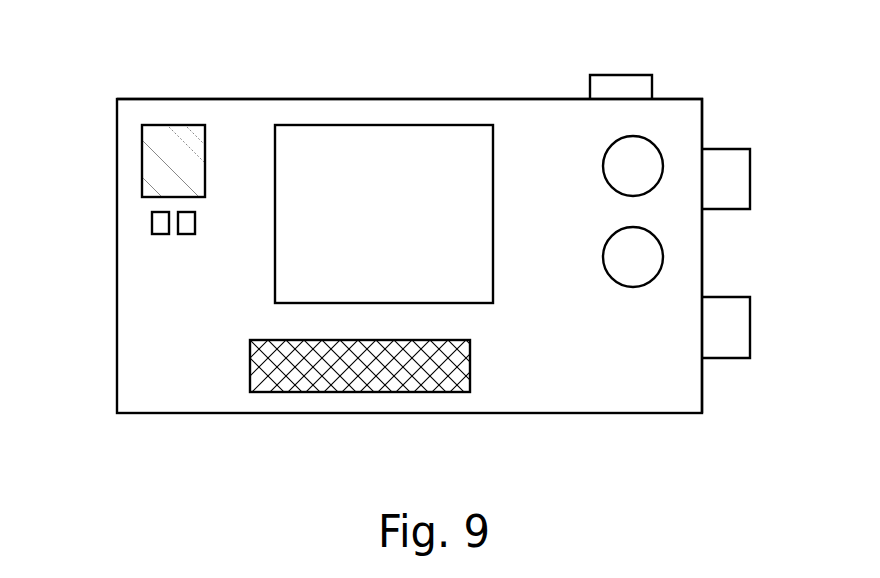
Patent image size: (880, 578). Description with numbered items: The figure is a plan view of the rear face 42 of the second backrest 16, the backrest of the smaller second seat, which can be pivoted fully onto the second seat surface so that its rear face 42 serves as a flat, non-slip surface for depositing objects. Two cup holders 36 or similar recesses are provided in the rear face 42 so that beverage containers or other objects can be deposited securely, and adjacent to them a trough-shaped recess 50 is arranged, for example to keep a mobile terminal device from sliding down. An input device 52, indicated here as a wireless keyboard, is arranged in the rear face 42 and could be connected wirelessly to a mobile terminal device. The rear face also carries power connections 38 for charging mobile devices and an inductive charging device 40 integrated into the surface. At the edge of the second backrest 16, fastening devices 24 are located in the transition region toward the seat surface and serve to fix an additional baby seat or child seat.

The second backrest 16 is at (168, 118).
The rear face 42 is at (261, 118).
The trough-shaped recess 50 is at (437, 145).
The inductive charging device 40 is at (158, 155).
The power connections 38 is at (150, 222).
The input device 52 is at (351, 373).
The cup holders 36 is at (638, 163).
The fastening devices 24 is at (730, 182).